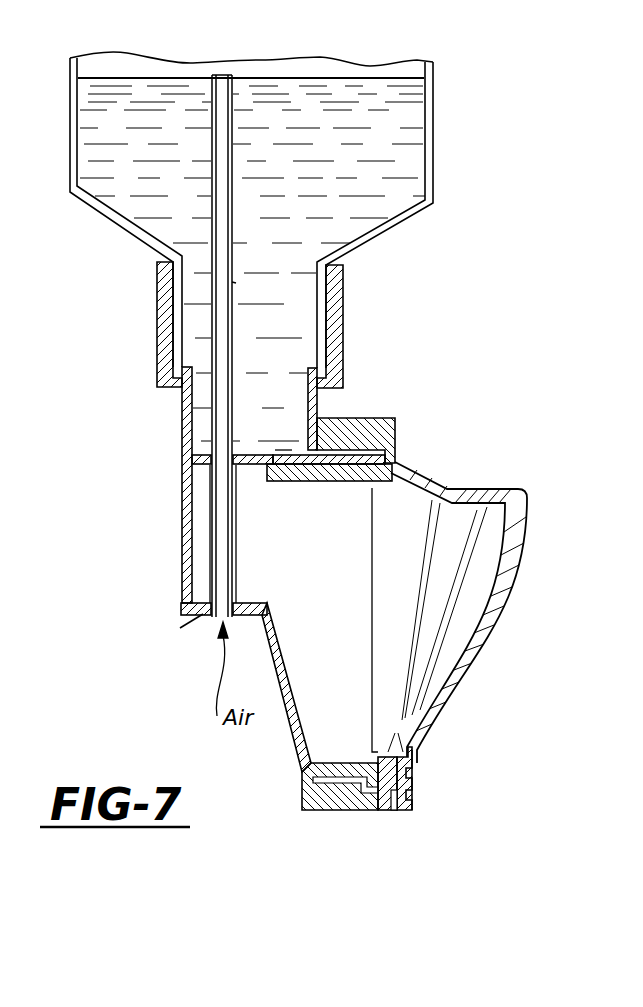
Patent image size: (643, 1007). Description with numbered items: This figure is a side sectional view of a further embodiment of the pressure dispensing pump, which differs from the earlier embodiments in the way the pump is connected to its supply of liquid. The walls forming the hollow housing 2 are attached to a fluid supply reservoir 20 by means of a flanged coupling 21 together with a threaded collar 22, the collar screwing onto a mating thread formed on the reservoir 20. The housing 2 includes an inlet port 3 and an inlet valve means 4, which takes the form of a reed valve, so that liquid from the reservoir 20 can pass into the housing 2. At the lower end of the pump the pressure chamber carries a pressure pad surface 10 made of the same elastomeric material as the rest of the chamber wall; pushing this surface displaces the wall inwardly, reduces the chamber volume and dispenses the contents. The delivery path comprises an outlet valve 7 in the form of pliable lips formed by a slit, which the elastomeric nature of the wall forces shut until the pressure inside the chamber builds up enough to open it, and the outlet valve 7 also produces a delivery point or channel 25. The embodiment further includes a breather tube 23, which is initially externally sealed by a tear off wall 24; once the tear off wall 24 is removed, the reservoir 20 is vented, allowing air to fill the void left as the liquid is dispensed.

The fluid supply reservoir 20 is at (433, 160).
The breather tube 23 is at (232, 282).
The threaded collar 22 is at (153, 310).
The hollow housing 2 is at (181, 440).
The inlet port 3 is at (283, 440).
The flanged coupling 21 is at (325, 410).
The inlet valve means 4 is at (321, 492).
The pressure pad surface 10 is at (513, 583).
The tear off wall 24 is at (196, 636).
The delivery point or channel 25 is at (384, 826).
The outlet valve 7 is at (397, 812).